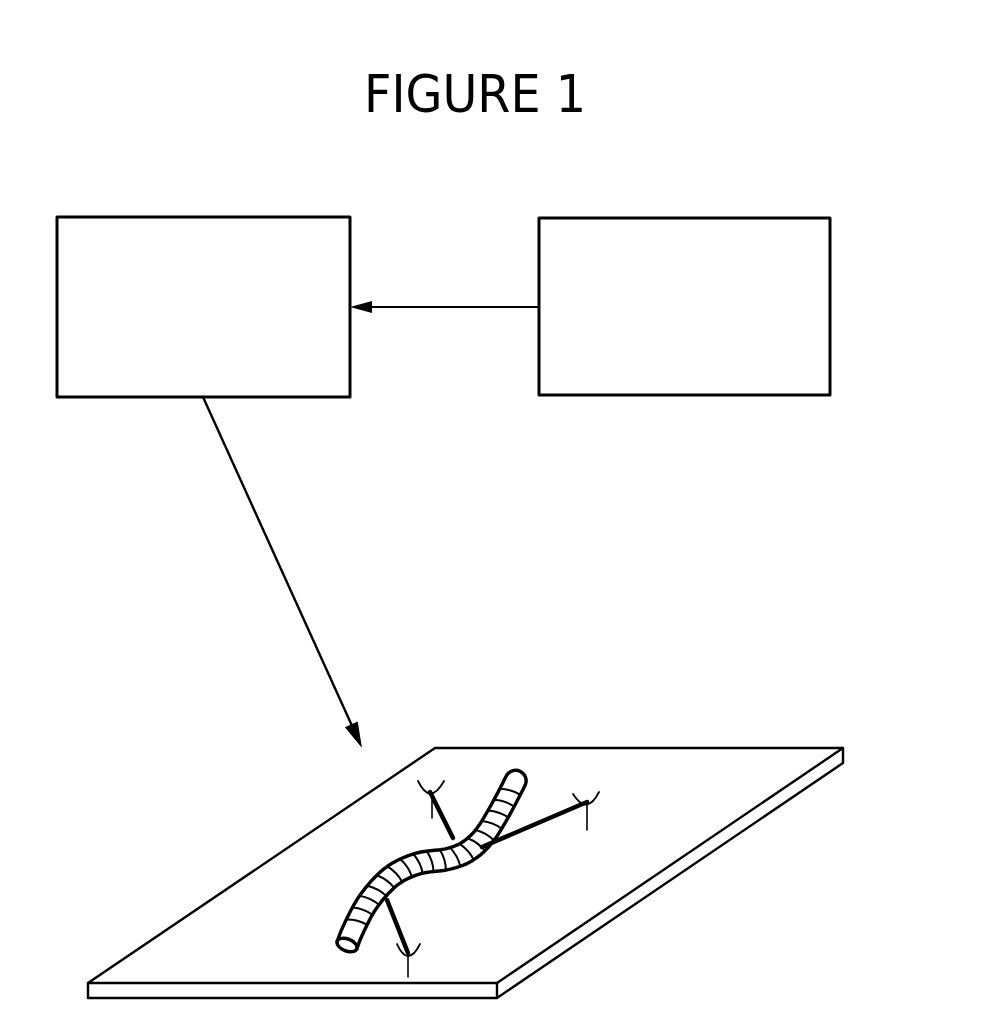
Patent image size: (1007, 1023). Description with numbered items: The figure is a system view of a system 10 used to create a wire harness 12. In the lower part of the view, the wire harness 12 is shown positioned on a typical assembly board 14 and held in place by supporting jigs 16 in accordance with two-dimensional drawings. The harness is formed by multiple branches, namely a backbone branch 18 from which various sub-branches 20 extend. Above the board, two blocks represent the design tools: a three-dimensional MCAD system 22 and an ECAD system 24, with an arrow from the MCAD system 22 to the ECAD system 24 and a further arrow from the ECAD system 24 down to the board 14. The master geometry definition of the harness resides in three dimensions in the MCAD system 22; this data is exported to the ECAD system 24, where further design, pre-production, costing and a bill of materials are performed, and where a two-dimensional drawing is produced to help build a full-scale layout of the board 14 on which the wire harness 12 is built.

The system 10 is at (640, 155).
The wire harness 12 is at (357, 915).
The assembly board 14 is at (622, 747).
The supporting jigs 16 is at (588, 823).
The backbone branch 18 is at (396, 857).
The sub-branches 20 is at (448, 813).
The MCAD system 22 is at (553, 397).
The ECAD system 24 is at (323, 397).